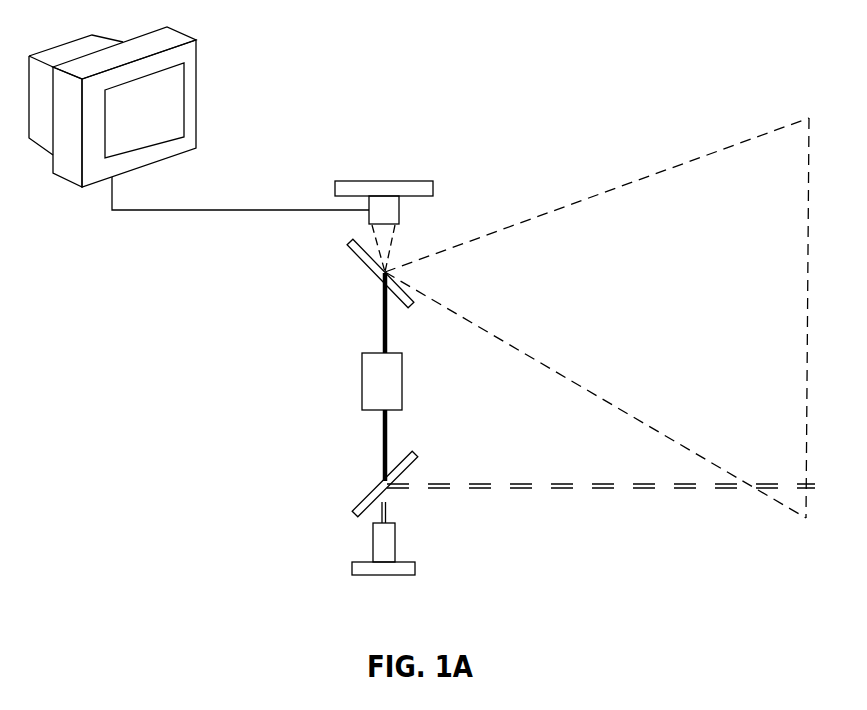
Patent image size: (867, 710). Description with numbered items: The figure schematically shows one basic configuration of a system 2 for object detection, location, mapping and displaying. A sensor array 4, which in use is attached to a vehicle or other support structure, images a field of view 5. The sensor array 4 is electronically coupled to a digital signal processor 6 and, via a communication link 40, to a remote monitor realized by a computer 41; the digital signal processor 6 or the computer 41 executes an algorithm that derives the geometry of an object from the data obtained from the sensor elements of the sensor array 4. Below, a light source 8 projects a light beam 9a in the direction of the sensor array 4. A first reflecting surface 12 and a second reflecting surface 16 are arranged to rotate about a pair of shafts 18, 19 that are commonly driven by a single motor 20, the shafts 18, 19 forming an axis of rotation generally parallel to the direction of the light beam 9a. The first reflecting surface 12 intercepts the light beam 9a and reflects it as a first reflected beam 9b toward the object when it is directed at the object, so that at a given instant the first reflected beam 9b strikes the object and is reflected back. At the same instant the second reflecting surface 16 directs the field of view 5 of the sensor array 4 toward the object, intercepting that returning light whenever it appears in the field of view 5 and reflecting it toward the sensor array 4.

The system 2 is at (377, 156).
The sensor array 4 is at (390, 210).
The field of view 5 is at (642, 227).
The digital signal processor 6 is at (370, 187).
The light source 8 is at (382, 538).
The light beam 9a is at (387, 507).
The first reflected beam 9b is at (582, 483).
The first reflecting surface 12 is at (363, 500).
The second reflecting surface 16 is at (355, 250).
The shaft 18 is at (380, 427).
The shaft 19 is at (382, 327).
The motor 20 is at (380, 375).
The communication link 40 is at (157, 212).
The computer 41 is at (70, 155).